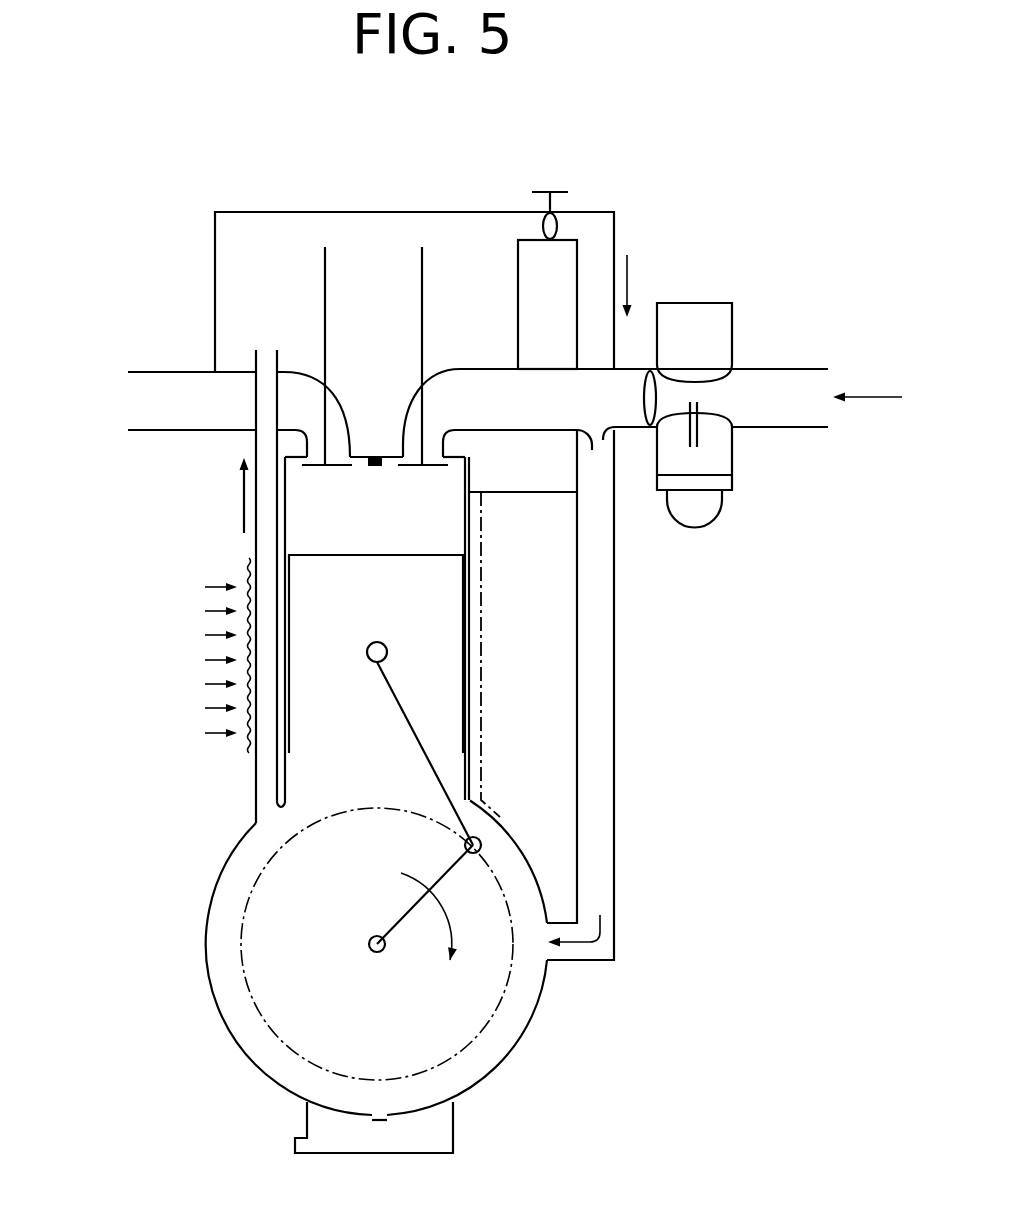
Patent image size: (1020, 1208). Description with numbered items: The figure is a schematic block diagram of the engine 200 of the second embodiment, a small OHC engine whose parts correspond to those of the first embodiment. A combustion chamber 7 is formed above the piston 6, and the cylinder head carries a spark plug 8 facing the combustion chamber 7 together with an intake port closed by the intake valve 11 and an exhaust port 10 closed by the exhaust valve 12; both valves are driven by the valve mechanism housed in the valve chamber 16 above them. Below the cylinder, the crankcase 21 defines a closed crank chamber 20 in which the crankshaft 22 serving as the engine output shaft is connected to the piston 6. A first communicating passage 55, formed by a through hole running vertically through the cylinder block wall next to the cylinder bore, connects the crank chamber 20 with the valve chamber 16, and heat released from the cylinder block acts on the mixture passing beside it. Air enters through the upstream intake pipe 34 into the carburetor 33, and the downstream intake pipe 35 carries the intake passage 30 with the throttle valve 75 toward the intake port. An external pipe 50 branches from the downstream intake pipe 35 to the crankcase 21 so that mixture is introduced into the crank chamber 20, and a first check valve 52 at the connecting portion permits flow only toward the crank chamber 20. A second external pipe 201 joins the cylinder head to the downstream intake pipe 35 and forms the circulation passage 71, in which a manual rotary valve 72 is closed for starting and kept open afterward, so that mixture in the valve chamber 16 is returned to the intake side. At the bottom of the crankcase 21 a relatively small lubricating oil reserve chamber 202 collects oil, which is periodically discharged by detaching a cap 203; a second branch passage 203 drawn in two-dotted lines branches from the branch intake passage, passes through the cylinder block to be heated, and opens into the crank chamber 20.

The engine 200 is at (192, 207).
The valve chamber 16 is at (255, 268).
The exhaust port 10 is at (178, 405).
The first communicating passage 55 is at (257, 778).
The exhaust valve 12 is at (325, 277).
The intake valve 11 is at (422, 277).
The spark plug 8 is at (371, 456).
The combustion chamber 7 is at (385, 530).
The piston 6 is at (417, 555).
The crankshaft 22 is at (369, 943).
The crankcase 21 is at (232, 1033).
The crank chamber 20 is at (505, 1024).
The lubricating oil reserve chamber 202 is at (430, 1133).
The cap / second branch passage 203 is at (295, 1143).
The external pipe 50 is at (616, 757).
The first check valve 52 is at (592, 442).
The downstream intake pipe 35 is at (632, 428).
The manual rotary valve 72 is at (558, 189).
The circulation passage 71 is at (593, 257).
The second external pipe 201 is at (615, 240).
The upstream intake pipe 34 is at (802, 369).
The throttle valve 75 is at (656, 397).
The intake passage 30 is at (592, 400).
The carburetor 33 is at (717, 457).